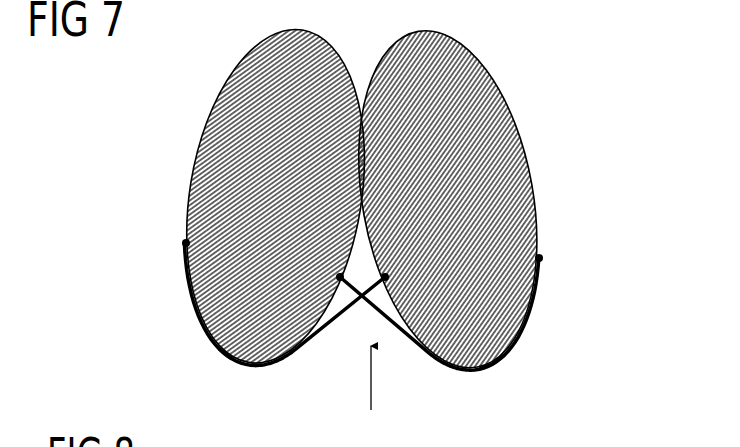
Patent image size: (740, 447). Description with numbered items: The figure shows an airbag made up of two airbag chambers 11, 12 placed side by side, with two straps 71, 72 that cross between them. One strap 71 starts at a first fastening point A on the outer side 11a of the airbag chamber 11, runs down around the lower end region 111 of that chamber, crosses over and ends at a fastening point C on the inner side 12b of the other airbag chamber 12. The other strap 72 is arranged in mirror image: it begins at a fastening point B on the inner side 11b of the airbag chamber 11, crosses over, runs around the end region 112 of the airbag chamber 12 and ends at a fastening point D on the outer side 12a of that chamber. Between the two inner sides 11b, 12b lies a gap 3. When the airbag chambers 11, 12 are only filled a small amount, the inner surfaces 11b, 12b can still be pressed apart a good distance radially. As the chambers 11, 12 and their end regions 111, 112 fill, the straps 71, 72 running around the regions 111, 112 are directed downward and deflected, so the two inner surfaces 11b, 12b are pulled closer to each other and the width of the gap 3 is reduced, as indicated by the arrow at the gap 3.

The airbag chamber 11 is at (228, 135).
The airbag chamber 12 is at (520, 177).
The outer side 11a is at (192, 300).
The inner side 11b is at (318, 328).
The outer side 12a is at (535, 303).
The inner side 12b is at (421, 345).
The first fastening point A is at (184, 242).
The fastening point B is at (342, 280).
The fastening point C is at (386, 281).
The fastening point D is at (544, 261).
The end region 111 is at (228, 360).
The strap 71 is at (256, 367).
The strap 72 is at (484, 368).
The end region 112 is at (497, 333).
The gap 3 is at (371, 395).